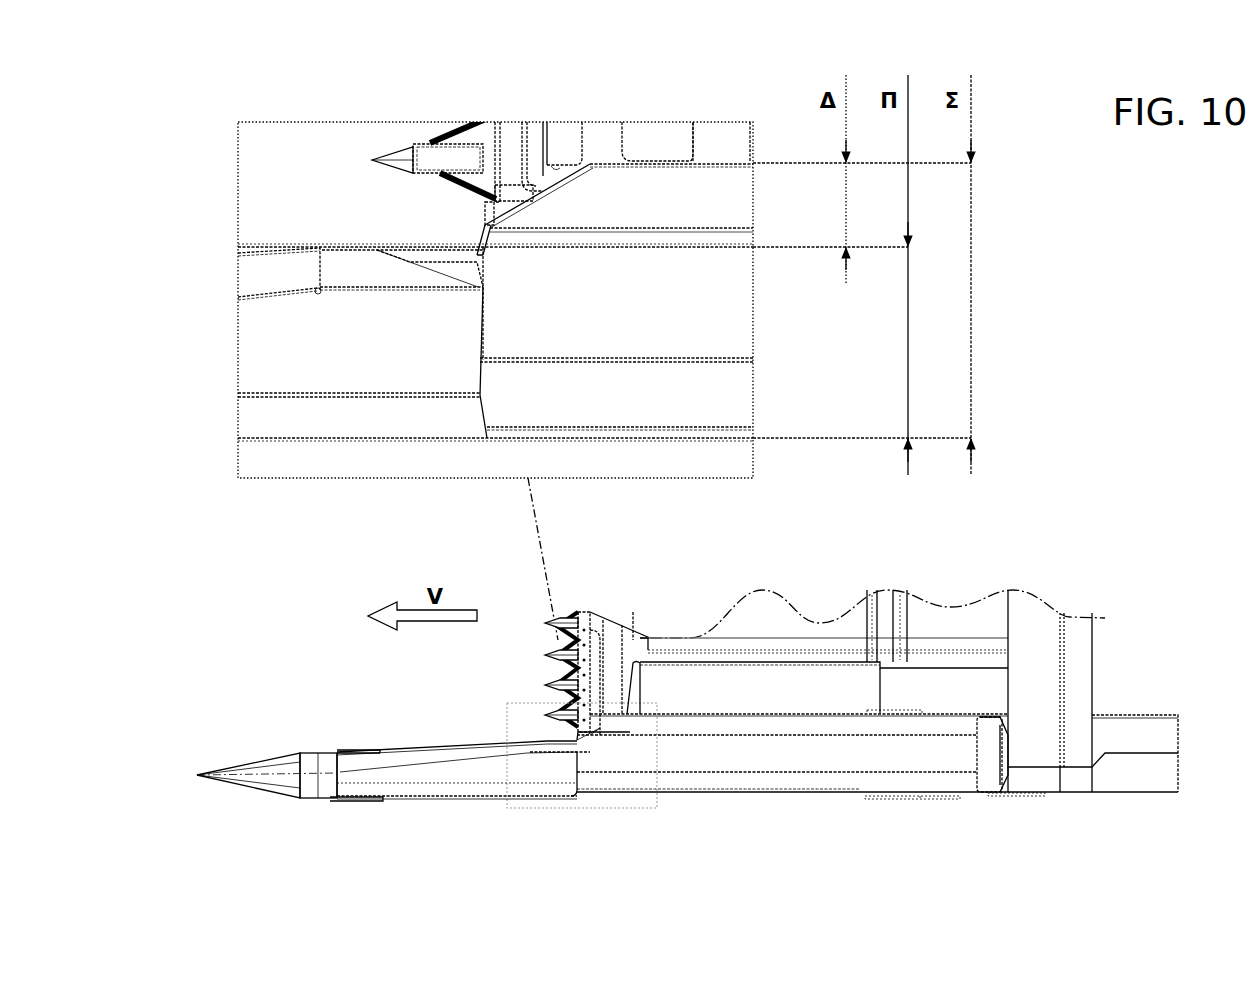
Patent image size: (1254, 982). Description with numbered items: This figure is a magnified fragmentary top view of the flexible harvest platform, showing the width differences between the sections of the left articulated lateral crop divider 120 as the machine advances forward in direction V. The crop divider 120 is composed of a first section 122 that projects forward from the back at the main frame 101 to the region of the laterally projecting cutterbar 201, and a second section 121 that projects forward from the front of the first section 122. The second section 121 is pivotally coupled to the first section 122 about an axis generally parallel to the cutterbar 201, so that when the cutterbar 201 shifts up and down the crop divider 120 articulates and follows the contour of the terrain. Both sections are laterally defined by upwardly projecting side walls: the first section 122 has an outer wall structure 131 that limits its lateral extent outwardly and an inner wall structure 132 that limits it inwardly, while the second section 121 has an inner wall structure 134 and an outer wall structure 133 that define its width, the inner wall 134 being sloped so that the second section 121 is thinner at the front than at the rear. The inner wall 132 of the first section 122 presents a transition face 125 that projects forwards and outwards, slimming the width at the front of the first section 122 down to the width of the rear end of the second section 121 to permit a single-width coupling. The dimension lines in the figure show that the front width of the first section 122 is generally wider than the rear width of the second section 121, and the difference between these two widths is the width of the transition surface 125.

The main frame 101 is at (1078, 660).
The lateral crop divider 120 is at (333, 728).
The second section 121 is at (378, 357).
The first section 122 is at (616, 318).
The transition face 125 is at (474, 236).
The outer wall structure 131 is at (623, 420).
The inner wall structure 132 is at (670, 170).
The outer wall structure 133 is at (442, 798).
The inner wall structure 134 is at (446, 746).
The cutterbar 201 is at (358, 161).